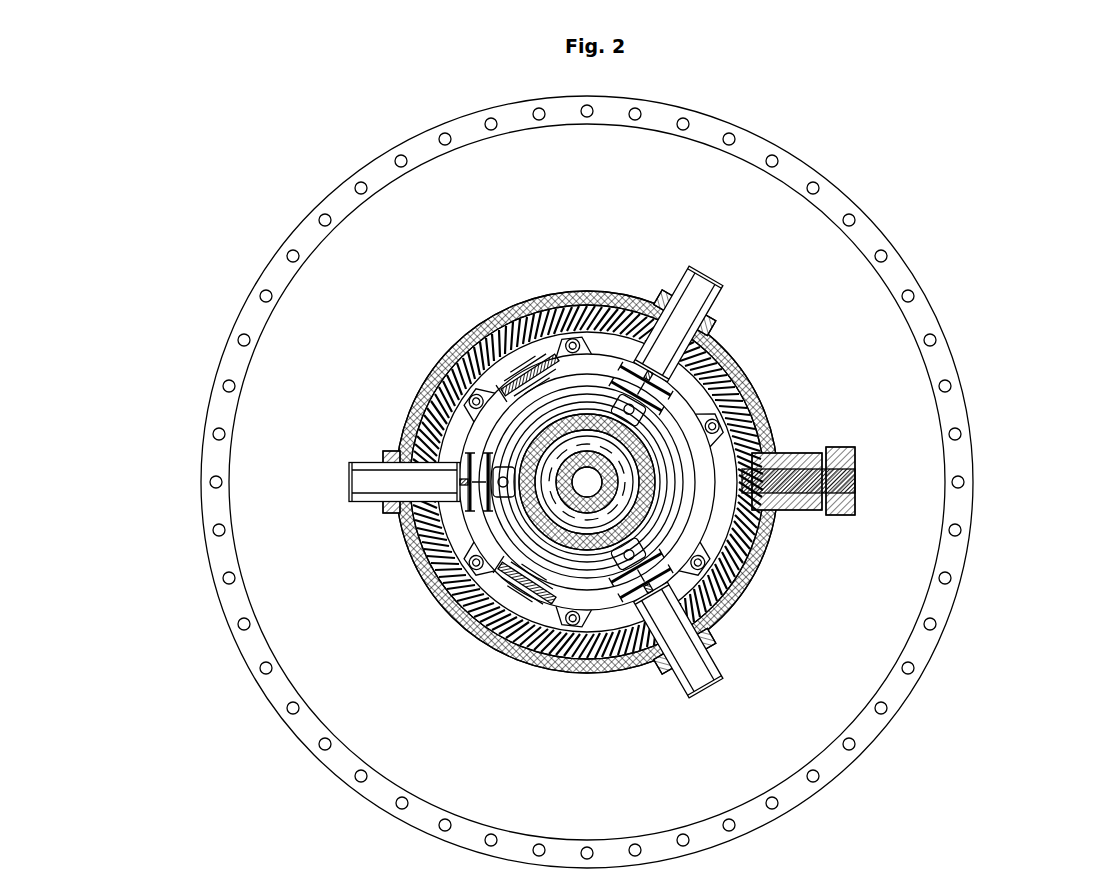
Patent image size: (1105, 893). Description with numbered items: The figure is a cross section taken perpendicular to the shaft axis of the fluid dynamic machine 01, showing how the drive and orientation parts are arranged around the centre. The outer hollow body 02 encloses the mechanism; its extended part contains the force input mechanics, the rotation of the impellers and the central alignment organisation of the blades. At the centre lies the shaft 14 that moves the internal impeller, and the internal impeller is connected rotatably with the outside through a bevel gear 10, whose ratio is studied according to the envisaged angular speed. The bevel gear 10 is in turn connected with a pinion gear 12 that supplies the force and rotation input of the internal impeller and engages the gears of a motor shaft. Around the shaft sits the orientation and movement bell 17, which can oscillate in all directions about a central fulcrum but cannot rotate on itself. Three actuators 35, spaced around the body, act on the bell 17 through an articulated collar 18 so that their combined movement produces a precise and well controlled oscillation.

The fluid dynamic machine 01 is at (347, 765).
The hollow body 02 is at (425, 588).
The bevel gear 10 is at (765, 558).
The pinion gear 12 is at (855, 484).
The shaft 14 is at (623, 468).
The orientation and movement bell 17 is at (510, 358).
The articulated collar 18 is at (487, 452).
The actuators 35 is at (355, 461).